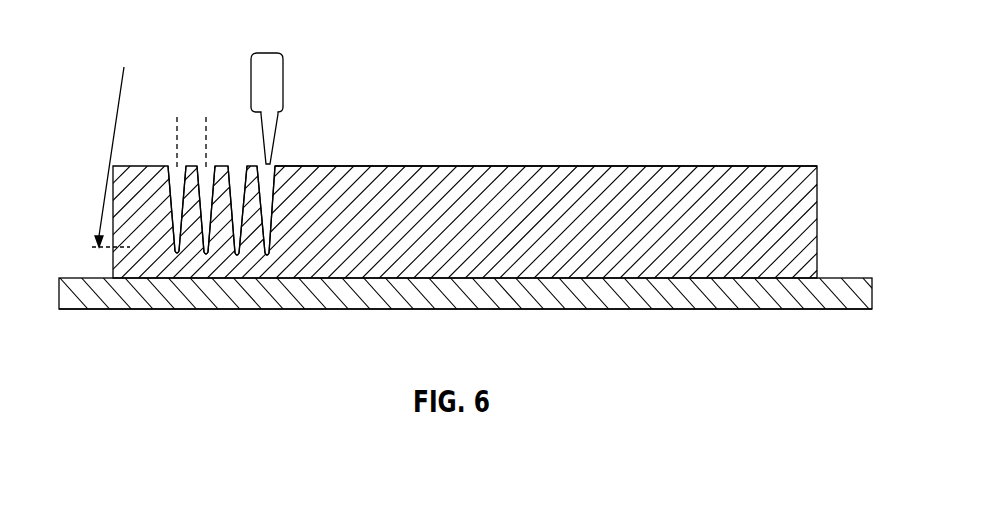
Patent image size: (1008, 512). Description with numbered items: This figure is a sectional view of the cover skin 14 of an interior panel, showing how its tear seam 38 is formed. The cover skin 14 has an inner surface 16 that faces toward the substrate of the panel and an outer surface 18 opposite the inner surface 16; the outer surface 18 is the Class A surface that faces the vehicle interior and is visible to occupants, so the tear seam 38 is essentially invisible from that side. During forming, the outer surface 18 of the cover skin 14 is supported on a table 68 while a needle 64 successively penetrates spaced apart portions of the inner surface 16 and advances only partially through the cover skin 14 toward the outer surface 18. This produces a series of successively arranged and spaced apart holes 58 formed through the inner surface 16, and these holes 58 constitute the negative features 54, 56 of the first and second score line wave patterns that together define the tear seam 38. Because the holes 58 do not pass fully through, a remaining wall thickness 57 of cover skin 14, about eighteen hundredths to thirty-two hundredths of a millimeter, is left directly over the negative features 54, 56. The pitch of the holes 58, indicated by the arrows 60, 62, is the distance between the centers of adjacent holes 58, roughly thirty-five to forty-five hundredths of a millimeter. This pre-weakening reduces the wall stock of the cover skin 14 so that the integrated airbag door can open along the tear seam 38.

The cover skin 14 is at (810, 213).
The inner surface 16 is at (717, 165).
The outer surface 18 is at (847, 278).
The tear seam 38 is at (191, 115).
The negative feature 54 is at (268, 203).
The negative feature 56 is at (191, 210).
The remaining wall thickness 57 is at (112, 137).
The holes 58 is at (234, 184).
The arrow indicating pitch distance 60 is at (177, 124).
The arrow indicating pitch distance 62 is at (206, 124).
The needle 64 is at (275, 84).
The table 68 is at (693, 311).